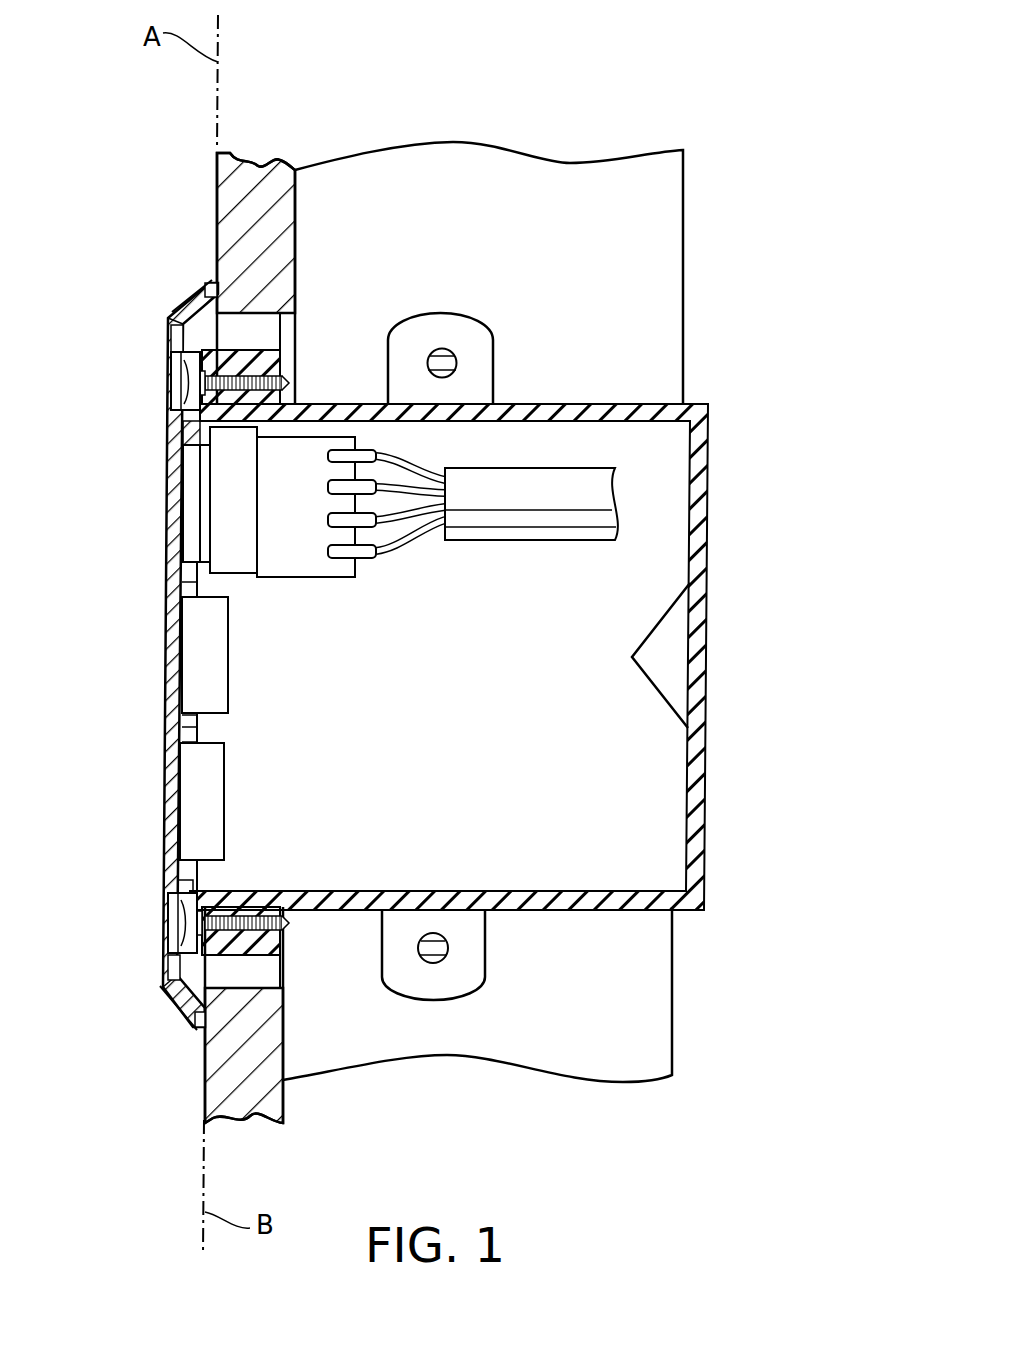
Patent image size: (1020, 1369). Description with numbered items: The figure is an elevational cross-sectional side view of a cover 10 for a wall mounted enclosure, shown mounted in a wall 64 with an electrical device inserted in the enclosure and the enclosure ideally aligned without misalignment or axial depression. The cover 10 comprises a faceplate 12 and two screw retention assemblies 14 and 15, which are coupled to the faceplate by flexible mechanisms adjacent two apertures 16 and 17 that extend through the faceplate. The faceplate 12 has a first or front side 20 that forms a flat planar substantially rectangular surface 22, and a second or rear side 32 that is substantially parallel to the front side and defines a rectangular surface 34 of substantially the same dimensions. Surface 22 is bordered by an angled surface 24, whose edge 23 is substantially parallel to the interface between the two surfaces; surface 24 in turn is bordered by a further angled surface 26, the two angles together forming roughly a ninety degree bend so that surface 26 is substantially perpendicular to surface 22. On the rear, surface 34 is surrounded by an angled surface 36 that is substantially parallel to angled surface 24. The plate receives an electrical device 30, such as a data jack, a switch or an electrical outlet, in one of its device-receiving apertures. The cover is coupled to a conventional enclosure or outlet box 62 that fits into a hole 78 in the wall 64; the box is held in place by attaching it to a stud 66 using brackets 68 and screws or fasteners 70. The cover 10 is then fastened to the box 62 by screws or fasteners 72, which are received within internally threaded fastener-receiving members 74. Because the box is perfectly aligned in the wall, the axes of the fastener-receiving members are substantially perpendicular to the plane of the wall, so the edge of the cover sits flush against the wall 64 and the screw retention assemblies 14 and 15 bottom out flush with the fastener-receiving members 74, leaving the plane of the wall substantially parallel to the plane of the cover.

The cover 10 is at (125, 748).
The faceplate 12 is at (167, 592).
The screw retention assembly 14 is at (173, 400).
The screw retention assembly 15 is at (172, 945).
The aperture 16 is at (170, 356).
The aperture 17 is at (170, 903).
The first side 20 is at (168, 502).
The rectangular surface 22 is at (167, 722).
The edge 23 is at (200, 292).
The angled surface 24 is at (180, 316).
The angled surface 26 is at (208, 283).
The electrical device 30 is at (320, 578).
The second side 32 is at (228, 735).
The rectangular surface 34 is at (232, 583).
The angled surface 36 is at (175, 326).
The enclosure 62 is at (712, 580).
The wall 64 is at (298, 160).
The stud 66 is at (587, 165).
The bracket 68 is at (495, 360).
The fastener 70 is at (442, 350).
The fastener 72 is at (290, 383).
The fastener-receiving member 74 is at (288, 345).
The hole 78 is at (295, 325).